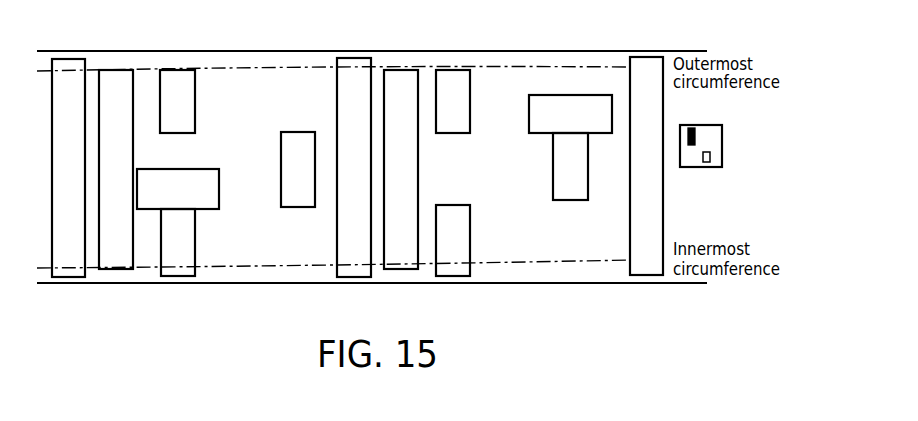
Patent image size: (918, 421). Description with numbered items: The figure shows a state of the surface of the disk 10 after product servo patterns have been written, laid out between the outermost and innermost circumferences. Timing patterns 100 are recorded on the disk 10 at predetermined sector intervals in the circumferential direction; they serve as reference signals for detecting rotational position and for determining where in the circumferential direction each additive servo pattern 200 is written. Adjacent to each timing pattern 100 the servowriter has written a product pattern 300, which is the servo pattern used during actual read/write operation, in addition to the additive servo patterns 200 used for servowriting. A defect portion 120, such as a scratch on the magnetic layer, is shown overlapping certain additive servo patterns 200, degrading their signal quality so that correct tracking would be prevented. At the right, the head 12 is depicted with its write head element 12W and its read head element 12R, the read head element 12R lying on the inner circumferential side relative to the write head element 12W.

The disk 10 is at (268, 51).
The head 12 is at (728, 161).
The write head element 12W is at (692, 127).
The read head element 12R is at (706, 163).
The timing pattern 100 is at (63, 63).
The defect portion 120 is at (190, 169).
The additive servo pattern 200 is at (196, 98).
The product pattern 300 is at (118, 77).